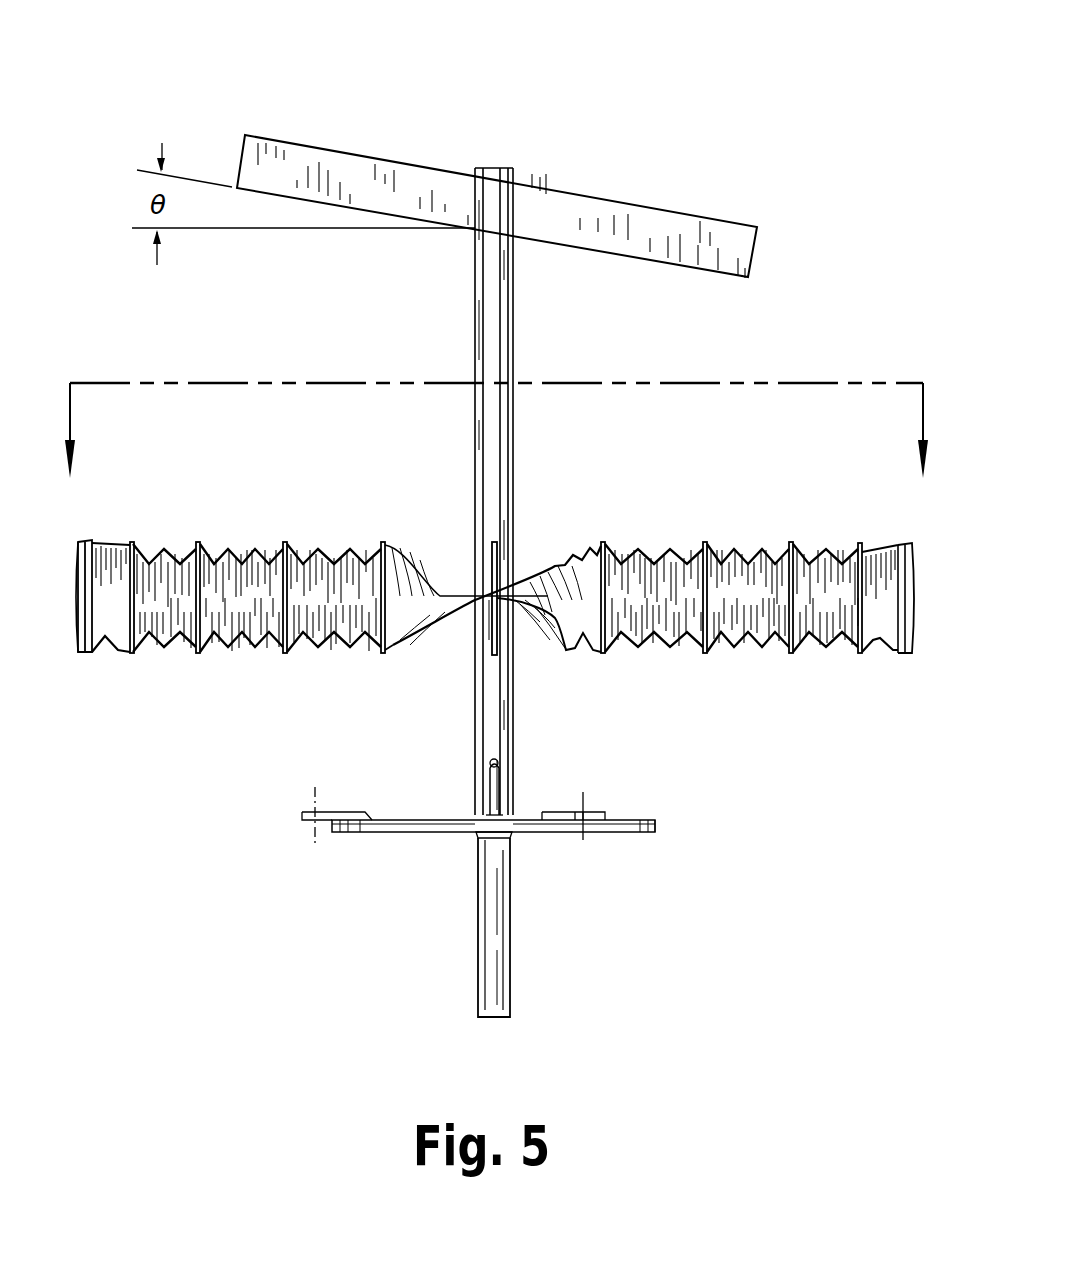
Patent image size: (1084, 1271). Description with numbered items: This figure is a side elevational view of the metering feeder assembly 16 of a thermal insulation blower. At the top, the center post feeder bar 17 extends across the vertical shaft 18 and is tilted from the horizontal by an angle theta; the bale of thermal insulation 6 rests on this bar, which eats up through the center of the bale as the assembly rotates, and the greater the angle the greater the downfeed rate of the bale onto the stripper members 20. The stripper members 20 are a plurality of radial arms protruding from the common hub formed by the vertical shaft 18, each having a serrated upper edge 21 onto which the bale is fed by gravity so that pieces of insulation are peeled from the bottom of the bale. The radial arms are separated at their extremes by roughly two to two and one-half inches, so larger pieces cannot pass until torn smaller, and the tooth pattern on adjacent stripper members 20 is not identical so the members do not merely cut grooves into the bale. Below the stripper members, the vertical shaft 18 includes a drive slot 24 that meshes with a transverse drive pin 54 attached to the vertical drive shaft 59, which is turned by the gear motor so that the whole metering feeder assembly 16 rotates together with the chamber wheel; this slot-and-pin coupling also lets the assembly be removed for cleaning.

The metering feeder assembly 16 is at (306, 58).
The center post feeder bar 17 is at (677, 208).
The common hub (vertical shaft) 18 is at (513, 494).
The bale of thermal insulation 6 is at (496, 444).
The stripper members 20 is at (72, 610).
The serrated upper edge 21 is at (253, 545).
The transverse drive pin 54 is at (499, 762).
The drive slot 24 is at (500, 786).
The vertical drive shaft (vertical axle) 59 is at (510, 928).